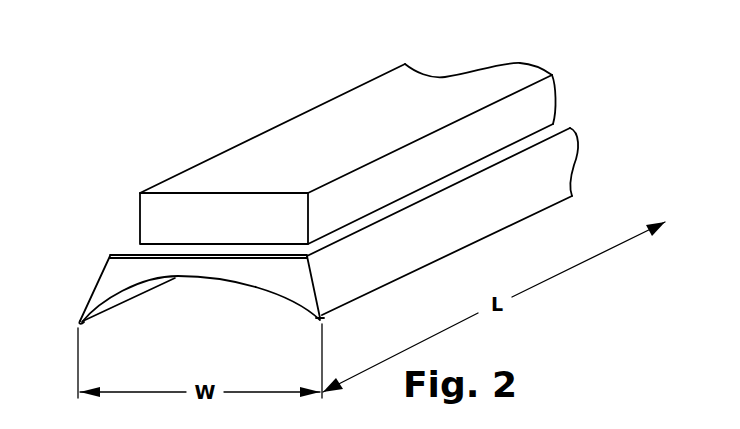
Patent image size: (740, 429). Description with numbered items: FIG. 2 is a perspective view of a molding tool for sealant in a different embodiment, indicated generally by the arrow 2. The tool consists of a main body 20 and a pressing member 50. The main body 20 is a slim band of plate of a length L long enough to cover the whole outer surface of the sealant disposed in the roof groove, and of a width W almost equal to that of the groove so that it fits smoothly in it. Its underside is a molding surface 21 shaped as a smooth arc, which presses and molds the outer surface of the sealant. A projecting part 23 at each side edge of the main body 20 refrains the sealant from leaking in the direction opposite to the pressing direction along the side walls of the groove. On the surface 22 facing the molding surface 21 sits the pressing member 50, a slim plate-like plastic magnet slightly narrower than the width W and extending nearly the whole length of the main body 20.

The mounting rail assembly 2 is at (555, 55).
The main body 20 is at (502, 233).
The molding surface 21 is at (217, 278).
The surface 22 is at (133, 250).
The projecting part 23 is at (85, 315).
The pressing member 50 is at (285, 135).